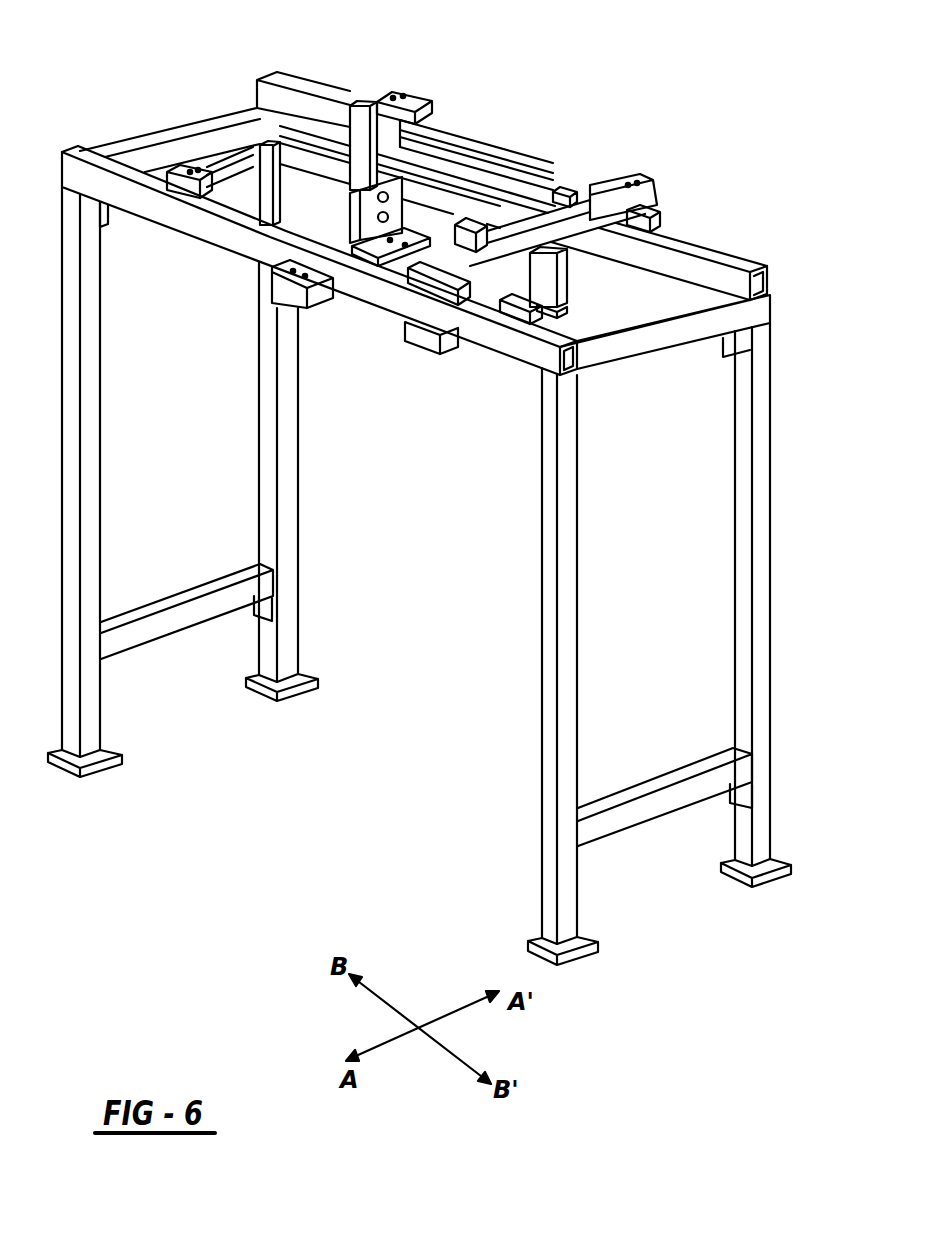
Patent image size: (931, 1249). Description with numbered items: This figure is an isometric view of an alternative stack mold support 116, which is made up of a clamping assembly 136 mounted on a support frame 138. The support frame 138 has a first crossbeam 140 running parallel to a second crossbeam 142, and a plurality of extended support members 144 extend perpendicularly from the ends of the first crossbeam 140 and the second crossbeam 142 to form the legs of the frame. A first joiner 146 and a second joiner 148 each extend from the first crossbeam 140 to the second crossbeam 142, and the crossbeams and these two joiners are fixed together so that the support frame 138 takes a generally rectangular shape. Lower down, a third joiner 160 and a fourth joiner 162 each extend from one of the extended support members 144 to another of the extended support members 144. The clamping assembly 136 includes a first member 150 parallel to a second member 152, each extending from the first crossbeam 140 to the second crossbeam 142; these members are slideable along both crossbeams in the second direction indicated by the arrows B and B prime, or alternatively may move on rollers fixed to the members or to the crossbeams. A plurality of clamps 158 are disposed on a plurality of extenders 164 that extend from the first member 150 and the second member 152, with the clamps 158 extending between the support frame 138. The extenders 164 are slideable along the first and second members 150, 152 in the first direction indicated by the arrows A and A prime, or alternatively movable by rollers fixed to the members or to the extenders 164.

The stack mold support 116 is at (657, 112).
The clamping assembly 136 is at (377, 338).
The support frame 138 is at (482, 747).
The first crossbeam 140 is at (88, 178).
The second crossbeam 142 is at (673, 260).
The extended support members 144 is at (96, 402).
The first joiner 146 is at (190, 155).
The second joiner 148 is at (632, 357).
The first member 150 is at (428, 108).
The second member 152 is at (660, 195).
The clamps 158 is at (472, 222).
The third joiner 160 is at (687, 770).
The fourth joiner 162 is at (222, 583).
The extenders 164 is at (348, 108).